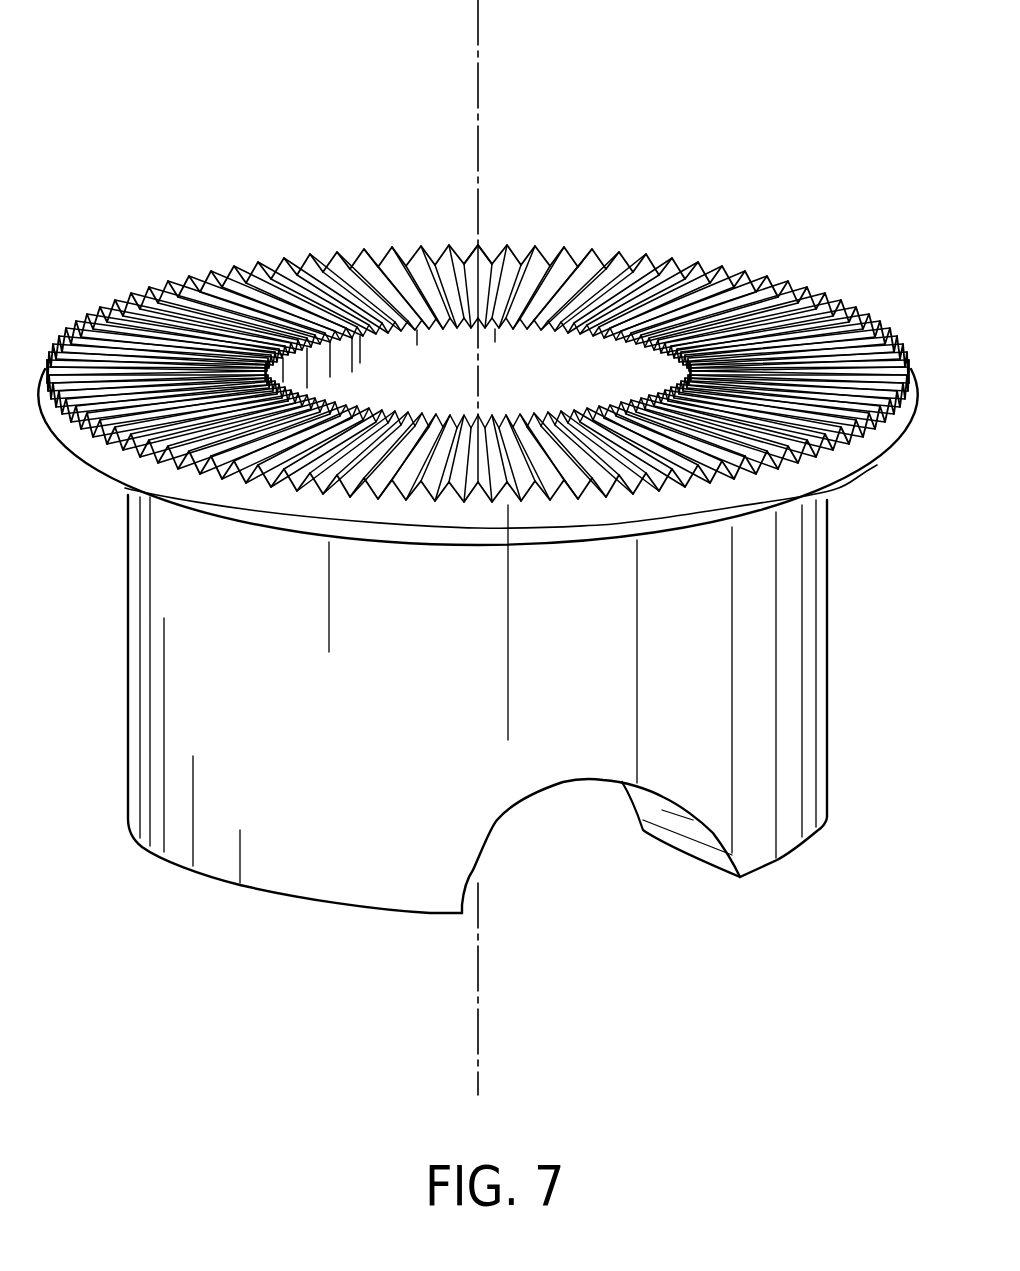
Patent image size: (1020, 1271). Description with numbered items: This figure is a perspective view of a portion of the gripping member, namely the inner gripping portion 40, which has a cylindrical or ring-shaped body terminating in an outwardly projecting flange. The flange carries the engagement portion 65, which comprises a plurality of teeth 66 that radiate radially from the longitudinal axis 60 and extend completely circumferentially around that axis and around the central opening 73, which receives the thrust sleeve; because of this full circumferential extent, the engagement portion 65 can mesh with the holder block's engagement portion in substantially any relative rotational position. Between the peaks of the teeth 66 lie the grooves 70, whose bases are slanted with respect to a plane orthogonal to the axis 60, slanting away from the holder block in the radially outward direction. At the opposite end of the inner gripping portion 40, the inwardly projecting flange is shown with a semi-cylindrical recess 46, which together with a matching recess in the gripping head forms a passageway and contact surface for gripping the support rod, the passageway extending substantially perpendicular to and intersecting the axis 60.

The inner gripping portion 40 is at (786, 643).
The recess 46 is at (568, 848).
The longitudinal axis 60 is at (480, 80).
The engagement portion 65 is at (750, 278).
The teeth 66 is at (353, 247).
The grooves 70 is at (492, 247).
The central opening 73 is at (324, 372).